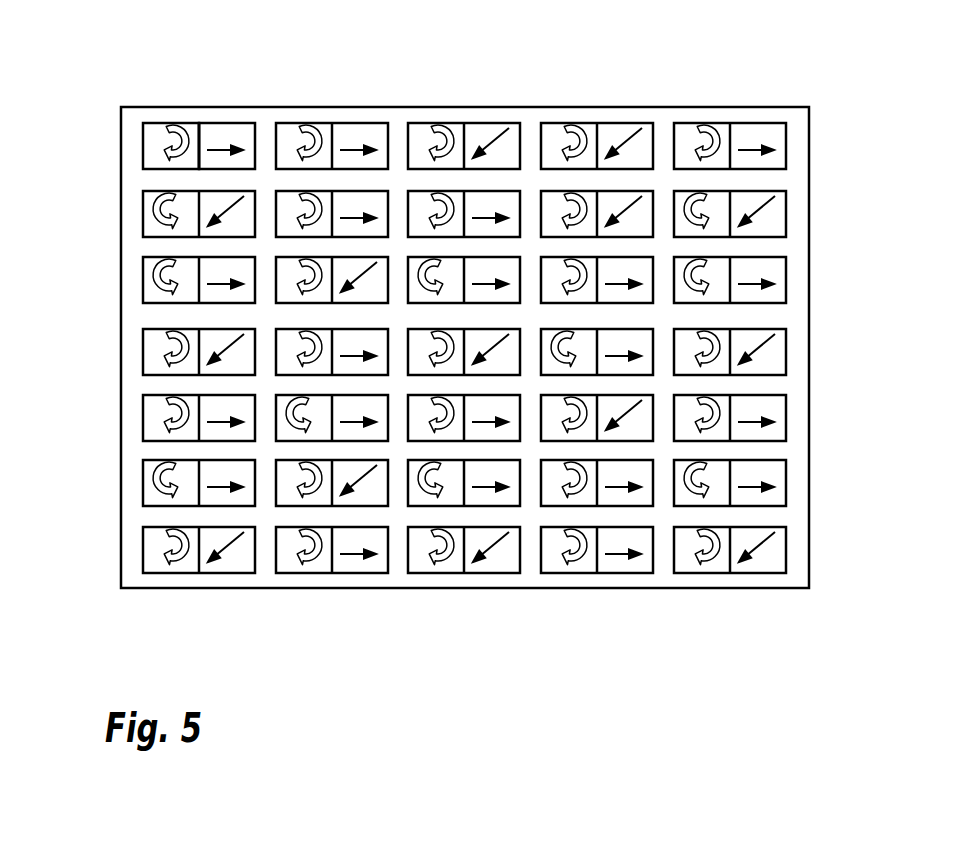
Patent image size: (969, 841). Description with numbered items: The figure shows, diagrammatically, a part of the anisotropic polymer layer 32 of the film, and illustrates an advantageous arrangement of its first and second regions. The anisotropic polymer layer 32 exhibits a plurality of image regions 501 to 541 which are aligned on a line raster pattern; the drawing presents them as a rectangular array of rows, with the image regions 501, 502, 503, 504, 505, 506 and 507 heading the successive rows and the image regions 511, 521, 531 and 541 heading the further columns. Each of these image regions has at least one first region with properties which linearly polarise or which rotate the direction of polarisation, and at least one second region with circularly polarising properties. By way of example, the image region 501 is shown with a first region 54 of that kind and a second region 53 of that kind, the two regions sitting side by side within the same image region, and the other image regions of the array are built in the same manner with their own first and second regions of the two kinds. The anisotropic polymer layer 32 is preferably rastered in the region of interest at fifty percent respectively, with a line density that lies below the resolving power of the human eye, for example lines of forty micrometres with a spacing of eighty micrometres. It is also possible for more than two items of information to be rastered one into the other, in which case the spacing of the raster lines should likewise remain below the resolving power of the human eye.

The anisotropic polymer layer 32 is at (808, 553).
The image region 501 is at (128, 147).
The image region 502 is at (128, 215).
The image region 503 is at (128, 281).
The image region 504 is at (128, 353).
The image region 505 is at (128, 419).
The image region 506 is at (128, 484).
The image region 507 is at (128, 551).
The image region 511 is at (349, 110).
The image region 521 is at (473, 118).
The image region 531 is at (607, 118).
The image region 541 is at (742, 118).
The second region 53 is at (193, 128).
The first region 54 is at (233, 128).